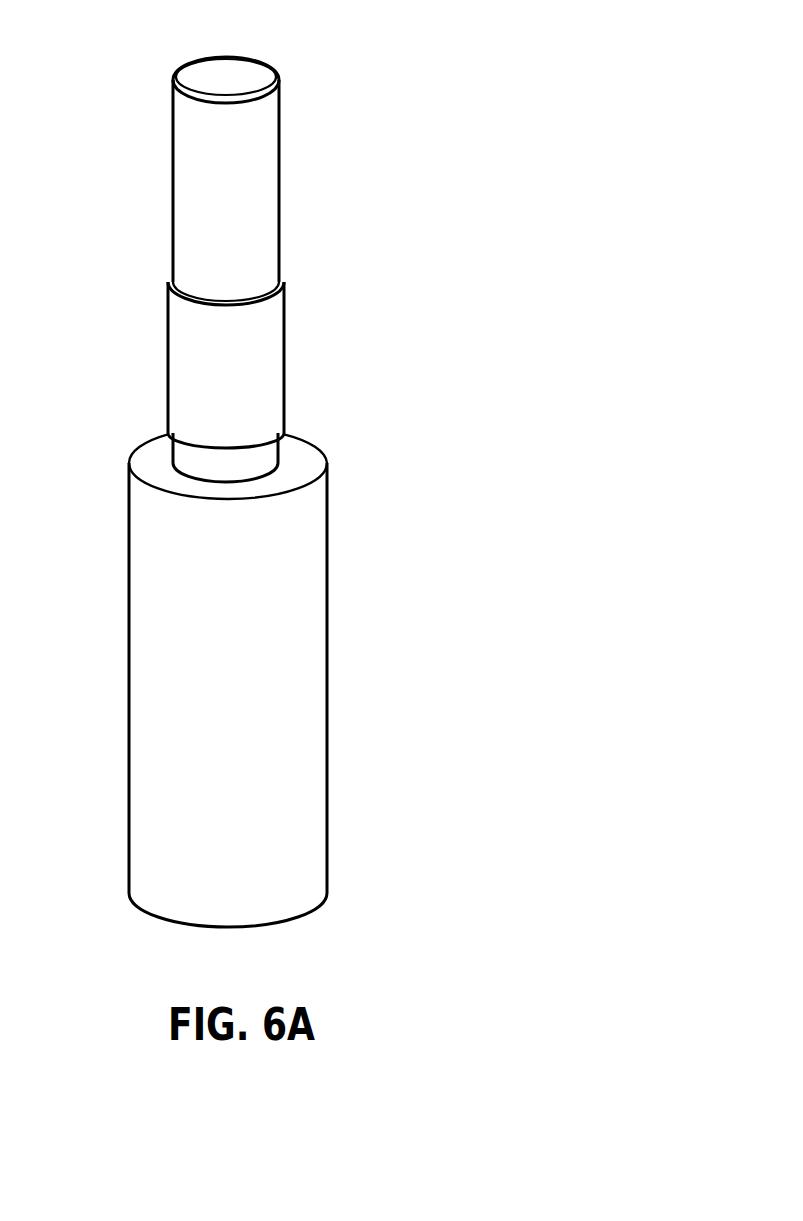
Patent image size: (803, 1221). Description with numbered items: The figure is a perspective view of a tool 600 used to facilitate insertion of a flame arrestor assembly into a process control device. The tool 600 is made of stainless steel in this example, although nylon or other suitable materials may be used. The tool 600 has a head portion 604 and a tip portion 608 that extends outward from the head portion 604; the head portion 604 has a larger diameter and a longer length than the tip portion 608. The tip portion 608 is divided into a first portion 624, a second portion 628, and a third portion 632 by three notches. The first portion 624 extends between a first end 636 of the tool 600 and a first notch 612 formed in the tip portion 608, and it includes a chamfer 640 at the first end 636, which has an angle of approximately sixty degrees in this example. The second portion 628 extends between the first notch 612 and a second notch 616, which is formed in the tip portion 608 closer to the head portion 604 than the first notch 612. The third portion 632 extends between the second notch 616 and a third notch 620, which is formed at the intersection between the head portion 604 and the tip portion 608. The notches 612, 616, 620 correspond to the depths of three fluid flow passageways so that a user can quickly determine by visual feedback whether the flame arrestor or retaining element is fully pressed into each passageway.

The tool 600 is at (383, 181).
The head portion 604 is at (350, 712).
The tip portion 608 is at (120, 74).
The first notch 612 is at (285, 282).
The second notch 616 is at (267, 440).
The third notch 620 is at (265, 469).
The first portion 624 is at (258, 130).
The second portion 628 is at (261, 334).
The third portion 632 is at (258, 457).
The first end 636 is at (232, 78).
The chamfer 640 is at (276, 88).